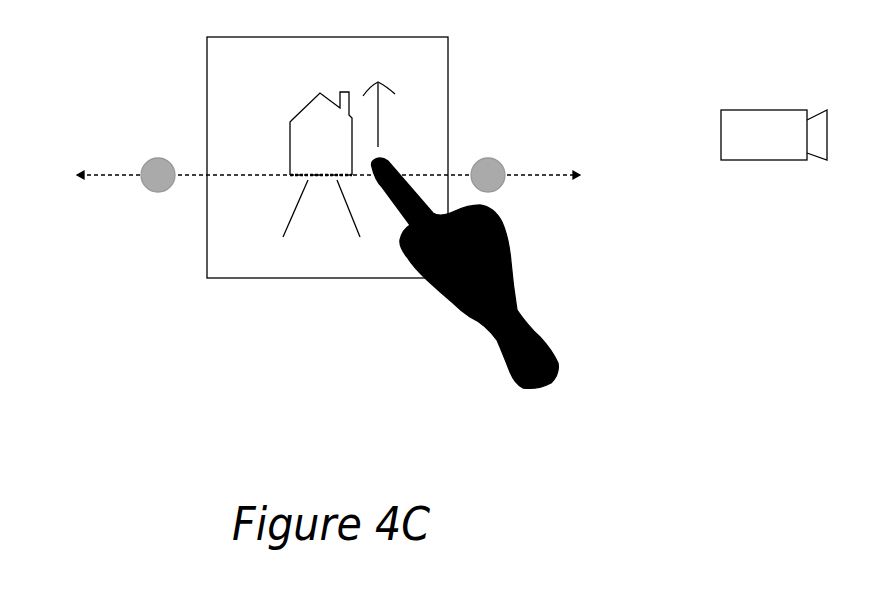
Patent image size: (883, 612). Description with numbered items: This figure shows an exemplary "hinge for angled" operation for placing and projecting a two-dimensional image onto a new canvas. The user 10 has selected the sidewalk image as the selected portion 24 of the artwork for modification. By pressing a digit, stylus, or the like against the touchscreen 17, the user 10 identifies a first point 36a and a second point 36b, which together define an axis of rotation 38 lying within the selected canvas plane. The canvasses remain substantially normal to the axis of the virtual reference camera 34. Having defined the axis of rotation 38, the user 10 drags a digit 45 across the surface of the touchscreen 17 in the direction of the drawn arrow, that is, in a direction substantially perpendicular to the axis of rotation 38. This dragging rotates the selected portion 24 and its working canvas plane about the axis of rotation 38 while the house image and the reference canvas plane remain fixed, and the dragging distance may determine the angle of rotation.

The user 10 is at (537, 393).
The touchscreen 17 is at (257, 85).
The selected portion of the artwork 24 is at (322, 208).
The virtual reference camera 34 is at (761, 103).
The first point 36a is at (158, 187).
The second point 36b is at (488, 158).
The axis of rotation 38 is at (79, 170).
The digit 45 is at (388, 195).